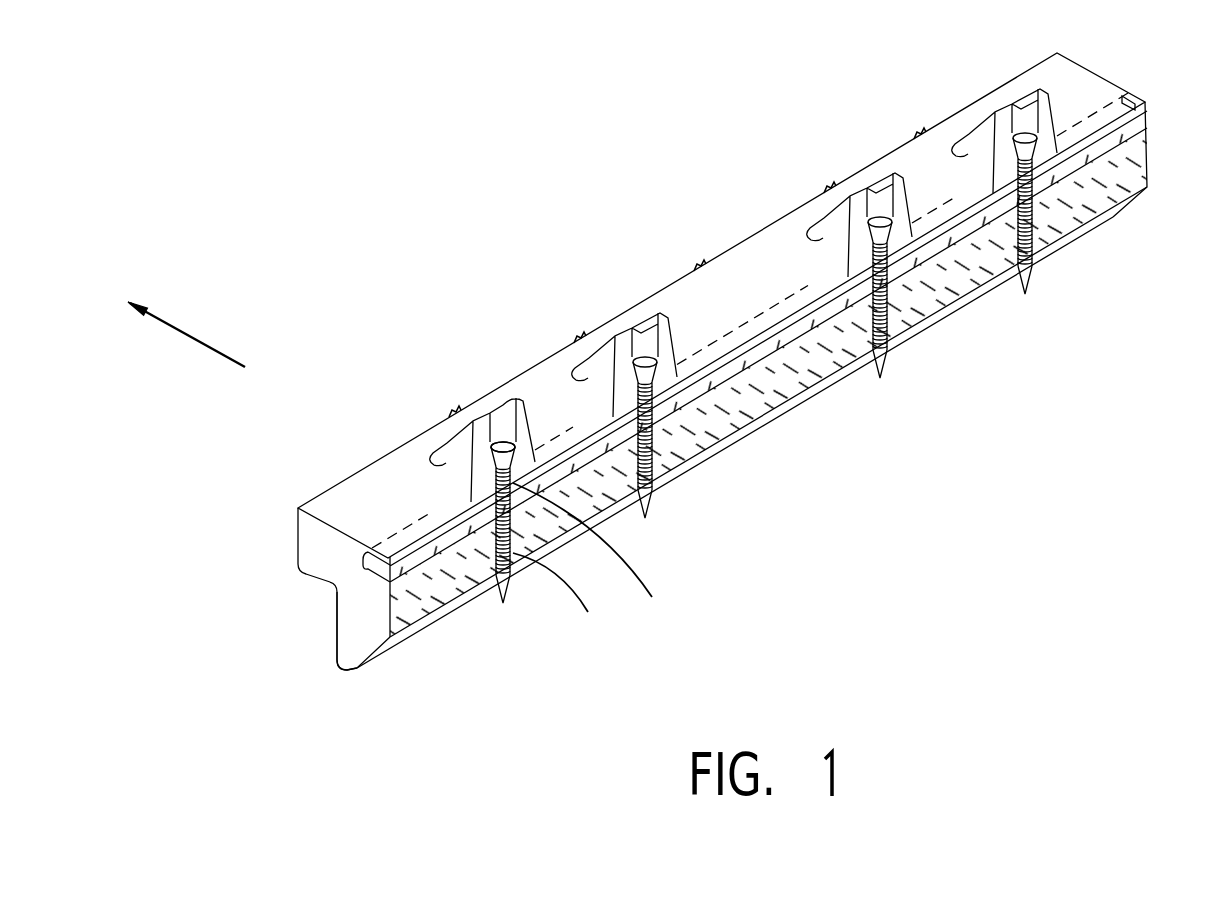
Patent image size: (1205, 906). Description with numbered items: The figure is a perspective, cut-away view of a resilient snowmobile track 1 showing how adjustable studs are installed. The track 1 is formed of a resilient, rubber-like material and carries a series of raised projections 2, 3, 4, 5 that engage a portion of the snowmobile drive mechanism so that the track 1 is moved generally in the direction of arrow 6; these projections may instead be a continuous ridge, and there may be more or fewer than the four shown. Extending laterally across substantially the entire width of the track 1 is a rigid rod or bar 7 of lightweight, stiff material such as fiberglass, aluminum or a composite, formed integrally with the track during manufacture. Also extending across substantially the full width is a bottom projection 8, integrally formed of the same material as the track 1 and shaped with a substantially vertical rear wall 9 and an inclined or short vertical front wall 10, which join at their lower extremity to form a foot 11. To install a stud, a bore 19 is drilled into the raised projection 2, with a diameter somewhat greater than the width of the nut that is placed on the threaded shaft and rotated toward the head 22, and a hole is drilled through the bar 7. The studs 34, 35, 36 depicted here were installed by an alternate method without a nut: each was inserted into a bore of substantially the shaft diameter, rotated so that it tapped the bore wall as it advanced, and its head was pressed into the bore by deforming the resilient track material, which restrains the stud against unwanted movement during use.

The snowmobile track 1 is at (746, 259).
The raised projection 2 is at (457, 455).
The raised projection 3 is at (598, 372).
The raised projection 4 is at (843, 235).
The raised projection 5 is at (987, 150).
The arrow 6 is at (192, 332).
The rigid rod or bar 7 is at (367, 570).
The bottom projection 8 is at (360, 637).
The rear wall 9 is at (338, 625).
The front wall 10 is at (393, 640).
The foot 11 is at (359, 669).
The bore 19 is at (499, 443).
The head 22 is at (498, 445).
The stud 34 is at (650, 438).
The stud 35 is at (892, 318).
The stud 36 is at (1033, 235).